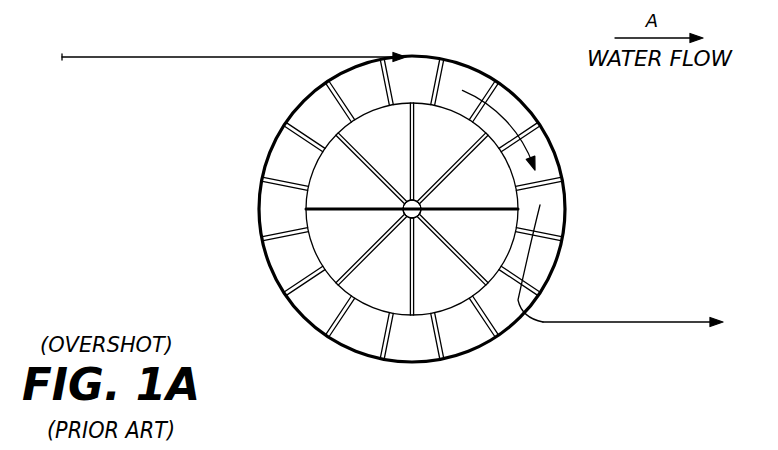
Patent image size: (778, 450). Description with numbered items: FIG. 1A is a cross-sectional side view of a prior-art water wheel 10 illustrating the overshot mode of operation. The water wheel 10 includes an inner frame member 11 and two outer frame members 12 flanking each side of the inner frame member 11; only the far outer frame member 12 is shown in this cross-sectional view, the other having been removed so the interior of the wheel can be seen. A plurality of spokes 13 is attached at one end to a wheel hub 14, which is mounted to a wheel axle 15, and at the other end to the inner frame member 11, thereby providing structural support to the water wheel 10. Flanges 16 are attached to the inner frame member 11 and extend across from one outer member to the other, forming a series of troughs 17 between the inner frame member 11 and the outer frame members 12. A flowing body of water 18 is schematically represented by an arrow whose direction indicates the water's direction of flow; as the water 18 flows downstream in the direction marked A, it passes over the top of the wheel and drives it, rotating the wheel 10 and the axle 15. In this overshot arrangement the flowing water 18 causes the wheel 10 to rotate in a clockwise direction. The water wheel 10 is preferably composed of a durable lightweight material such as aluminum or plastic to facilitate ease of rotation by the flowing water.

The water wheel 10 is at (384, 209).
The inner frame member 11 is at (312, 243).
The outer frame members 12 is at (290, 120).
The spokes 13 is at (458, 208).
The wheel hub 14 is at (407, 220).
The wheel axle 15 is at (408, 199).
The flanges 16 is at (287, 226).
The troughs 17 is at (283, 258).
The flowing body of water 18 is at (163, 60).